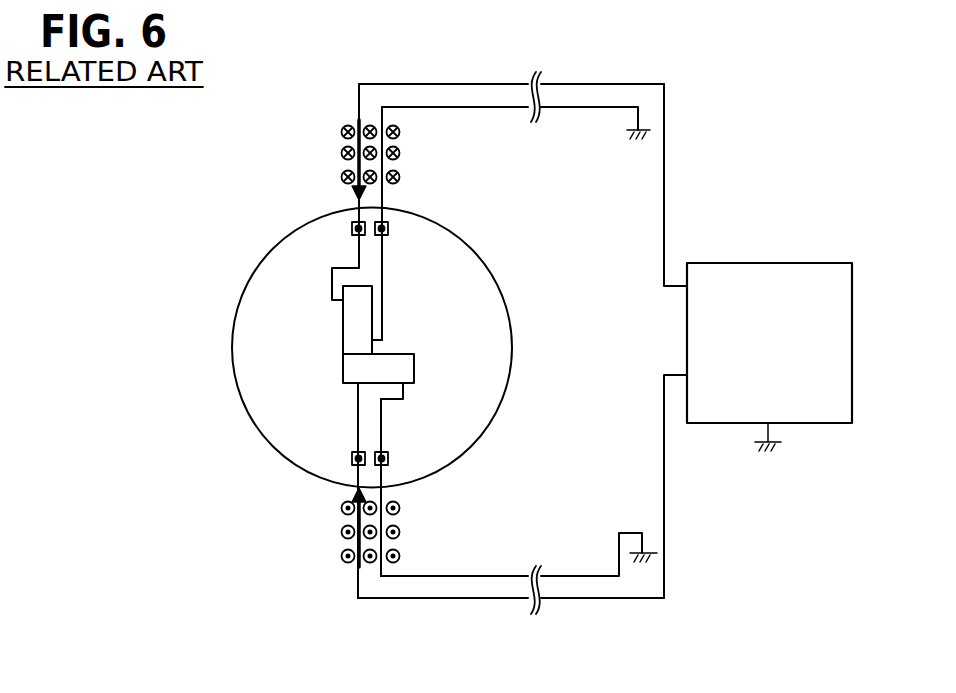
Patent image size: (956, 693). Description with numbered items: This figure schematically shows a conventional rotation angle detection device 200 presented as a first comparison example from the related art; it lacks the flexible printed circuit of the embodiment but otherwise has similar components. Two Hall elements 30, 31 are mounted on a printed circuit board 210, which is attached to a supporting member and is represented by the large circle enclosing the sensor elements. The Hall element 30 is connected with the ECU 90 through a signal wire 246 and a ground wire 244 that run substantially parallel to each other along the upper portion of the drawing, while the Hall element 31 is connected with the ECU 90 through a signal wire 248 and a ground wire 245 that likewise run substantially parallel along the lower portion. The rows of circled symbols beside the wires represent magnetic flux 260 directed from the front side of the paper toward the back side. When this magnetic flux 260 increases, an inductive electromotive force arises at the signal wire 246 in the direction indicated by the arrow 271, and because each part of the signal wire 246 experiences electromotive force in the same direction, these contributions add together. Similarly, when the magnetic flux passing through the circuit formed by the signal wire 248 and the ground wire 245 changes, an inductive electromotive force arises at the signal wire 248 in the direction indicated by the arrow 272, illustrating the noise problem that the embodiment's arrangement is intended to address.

The rotation angle detection device 200 is at (749, 92).
The printed circuit board 210 is at (265, 278).
The Hall element 30 is at (348, 327).
The Hall element 31 is at (405, 365).
The ECU 90 is at (746, 263).
The ground wire 244 is at (460, 107).
The ground wire 245 is at (470, 576).
The signal wire 246 is at (460, 84).
The signal wire 248 is at (470, 600).
The magnetic flux 260 is at (367, 126).
The arrow 271 is at (352, 197).
The arrow 272 is at (352, 492).